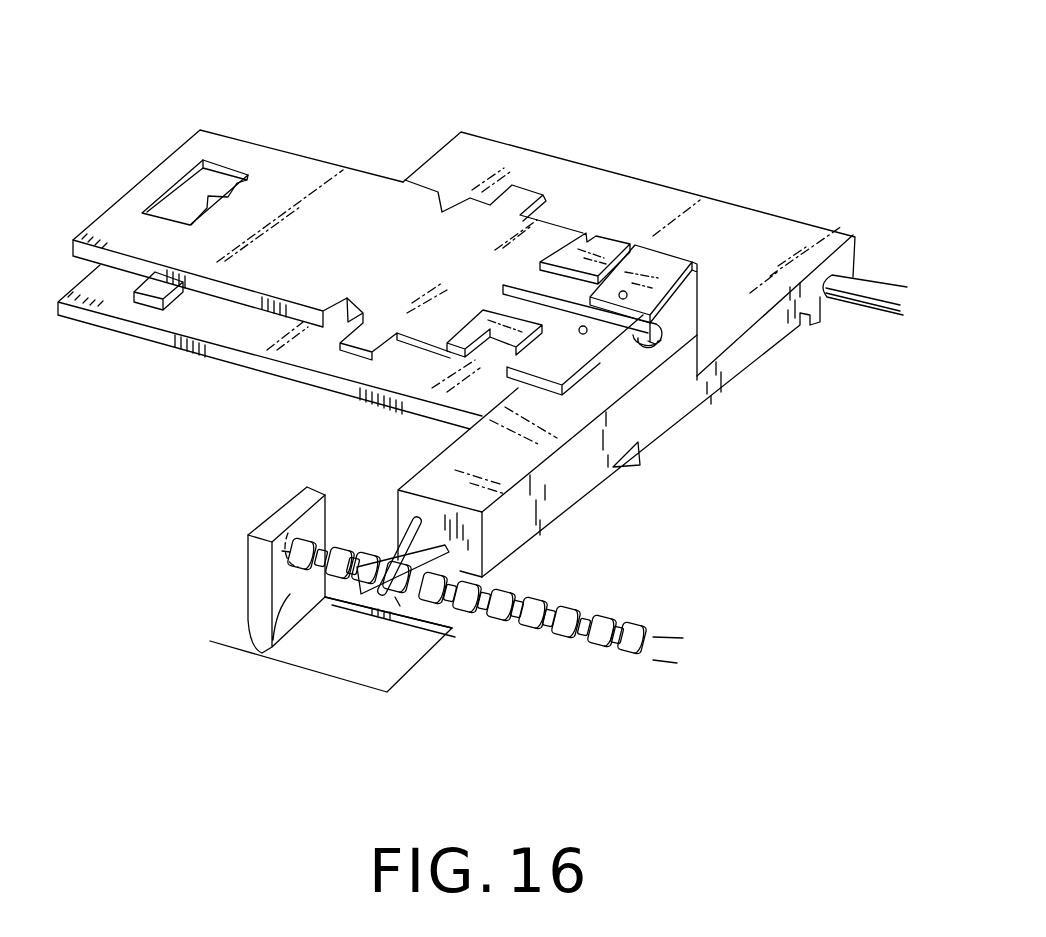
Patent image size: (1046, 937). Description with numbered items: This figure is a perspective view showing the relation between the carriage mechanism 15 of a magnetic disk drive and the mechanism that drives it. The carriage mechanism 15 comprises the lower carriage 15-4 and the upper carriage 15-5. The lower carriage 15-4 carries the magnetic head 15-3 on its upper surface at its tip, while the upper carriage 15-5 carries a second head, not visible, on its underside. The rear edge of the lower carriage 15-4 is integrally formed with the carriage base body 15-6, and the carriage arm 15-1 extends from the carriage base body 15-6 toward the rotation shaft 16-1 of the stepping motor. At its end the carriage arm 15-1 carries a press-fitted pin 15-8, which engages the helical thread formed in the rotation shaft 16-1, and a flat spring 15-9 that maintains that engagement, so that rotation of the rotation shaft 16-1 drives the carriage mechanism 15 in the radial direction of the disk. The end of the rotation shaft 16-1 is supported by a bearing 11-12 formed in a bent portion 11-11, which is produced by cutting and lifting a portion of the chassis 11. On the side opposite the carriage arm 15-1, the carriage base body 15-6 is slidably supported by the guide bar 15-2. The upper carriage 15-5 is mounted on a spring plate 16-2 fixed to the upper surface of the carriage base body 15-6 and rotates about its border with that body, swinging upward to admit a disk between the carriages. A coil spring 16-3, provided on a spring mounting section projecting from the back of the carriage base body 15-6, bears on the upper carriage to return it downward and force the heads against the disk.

The carriage mechanism 15 is at (503, 132).
The upper carriage 15-5 is at (350, 192).
The lower carriage 15-4 is at (240, 363).
The magnetic head 15-3 is at (157, 287).
The coil spring 16-3 is at (520, 284).
The spring plate 16-2 is at (670, 250).
The guide bar 15-2 is at (860, 292).
The carriage base body 15-6 is at (643, 422).
The carriage arm 15-1 is at (452, 463).
The pin 15-8 is at (392, 555).
The rotation shaft 16-1 is at (567, 615).
The bent portion 11-11 is at (250, 581).
The bearing 11-12 is at (290, 568).
The flat spring 15-9 is at (450, 613).
The chassis 11 is at (305, 683).